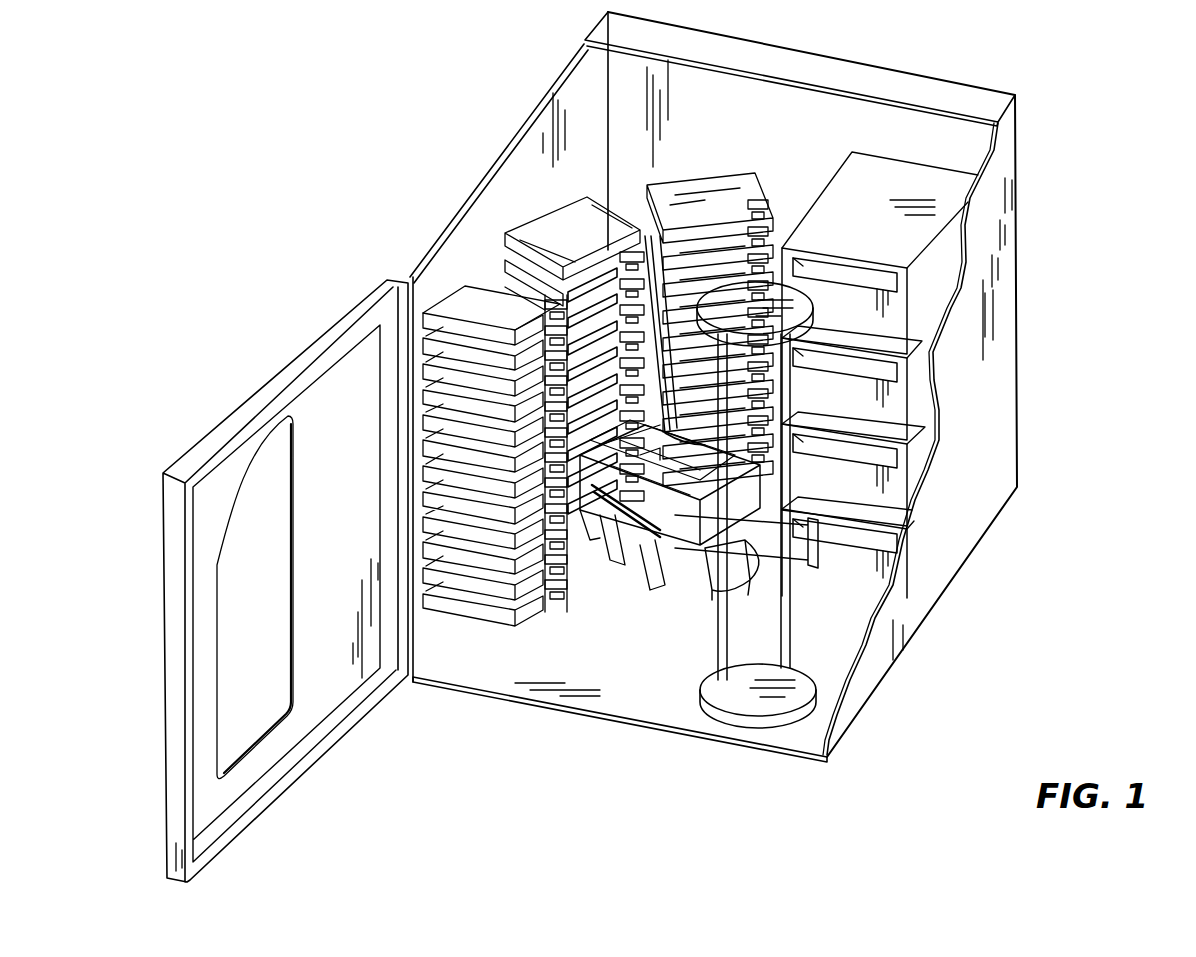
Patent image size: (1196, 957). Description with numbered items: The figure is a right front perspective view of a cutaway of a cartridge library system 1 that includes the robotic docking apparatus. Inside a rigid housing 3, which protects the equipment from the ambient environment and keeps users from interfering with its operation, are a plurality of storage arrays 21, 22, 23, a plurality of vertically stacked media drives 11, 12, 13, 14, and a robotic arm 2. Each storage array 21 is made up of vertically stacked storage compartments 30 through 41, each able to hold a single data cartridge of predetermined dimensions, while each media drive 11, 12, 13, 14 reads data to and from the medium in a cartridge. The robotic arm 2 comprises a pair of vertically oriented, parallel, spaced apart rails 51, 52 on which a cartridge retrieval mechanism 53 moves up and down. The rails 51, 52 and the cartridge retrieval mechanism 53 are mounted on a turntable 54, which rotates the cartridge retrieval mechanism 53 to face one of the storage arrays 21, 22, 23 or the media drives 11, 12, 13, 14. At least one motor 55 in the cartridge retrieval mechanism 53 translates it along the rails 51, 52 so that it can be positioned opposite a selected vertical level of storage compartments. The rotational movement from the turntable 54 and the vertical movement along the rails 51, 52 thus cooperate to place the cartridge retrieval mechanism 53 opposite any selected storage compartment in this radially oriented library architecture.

The cartridge library system 1 is at (1108, 128).
The robotic arm 2 is at (822, 612).
The rigid housing 3 is at (572, 60).
The media drive 11 is at (938, 268).
The media drive 12 is at (918, 388).
The media drive 13 is at (923, 445).
The media drive 14 is at (880, 567).
The storage array 21 is at (447, 258).
The storage array 22 is at (543, 198).
The storage array 23 is at (728, 165).
The storage compartment 30 is at (507, 620).
The storage compartment 41 is at (405, 272).
The rail 51 is at (722, 652).
The rail 52 is at (785, 632).
The cartridge retrieval mechanism 53 is at (632, 558).
The turntable 54 is at (732, 710).
The motor 55 is at (748, 583).